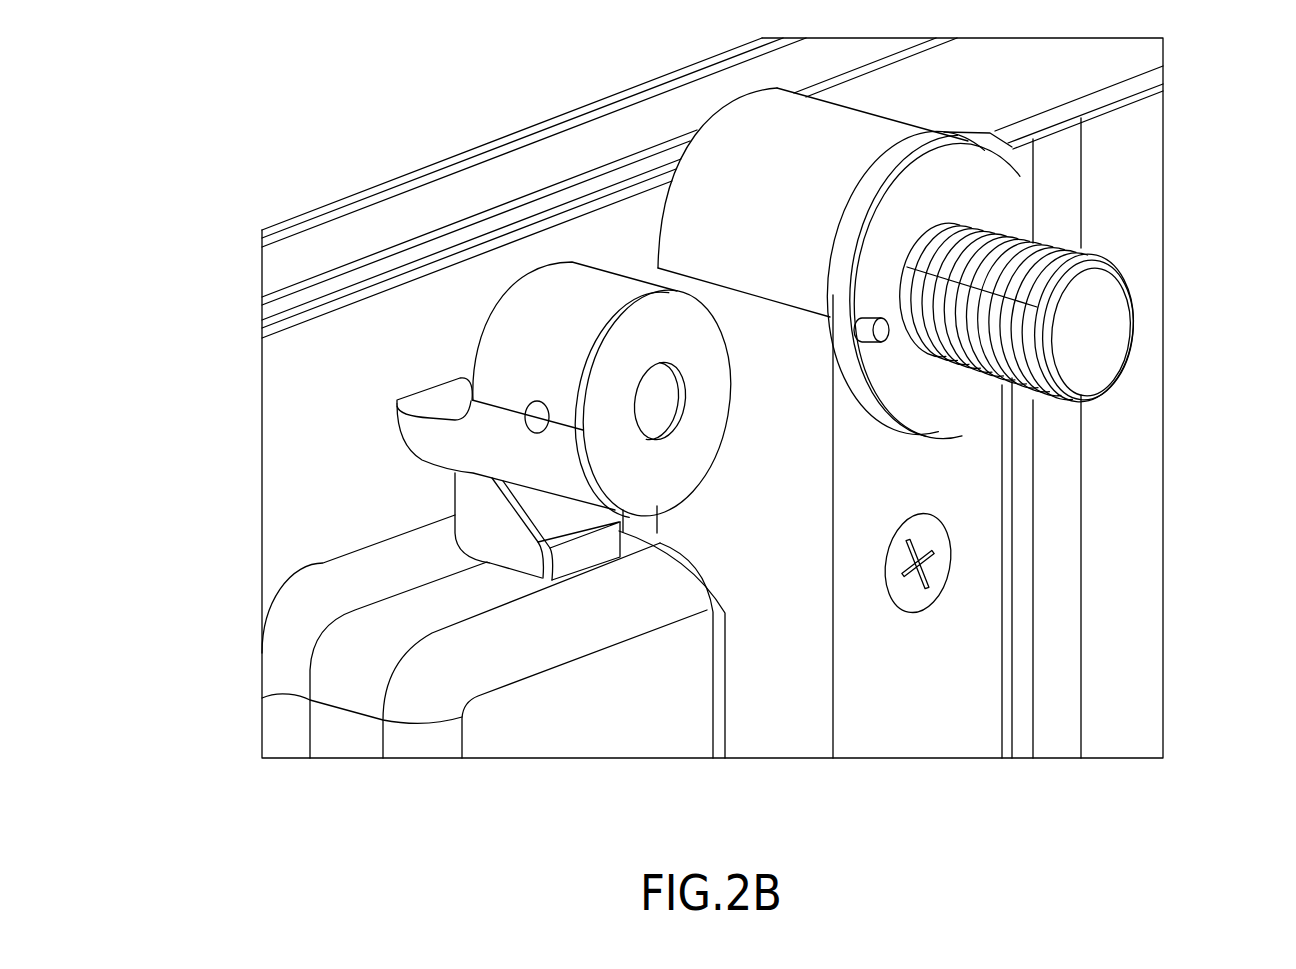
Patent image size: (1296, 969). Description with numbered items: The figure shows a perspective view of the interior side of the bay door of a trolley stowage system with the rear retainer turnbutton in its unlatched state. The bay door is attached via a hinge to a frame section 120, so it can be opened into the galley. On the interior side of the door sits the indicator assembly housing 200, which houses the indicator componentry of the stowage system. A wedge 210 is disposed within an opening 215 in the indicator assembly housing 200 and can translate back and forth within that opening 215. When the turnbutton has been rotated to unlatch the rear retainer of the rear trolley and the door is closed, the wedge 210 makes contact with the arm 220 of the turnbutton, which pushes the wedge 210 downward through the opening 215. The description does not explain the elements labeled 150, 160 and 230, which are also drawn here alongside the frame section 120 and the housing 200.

The frame section 120 is at (722, 84).
The threaded shaft 150 is at (1100, 333).
The roller 160 is at (550, 325).
The indicator assembly housing 200 is at (659, 401).
The wedge 210 is at (560, 520).
The opening 215 is at (580, 565).
The arm 220 is at (430, 398).
The base block 230 is at (505, 737).